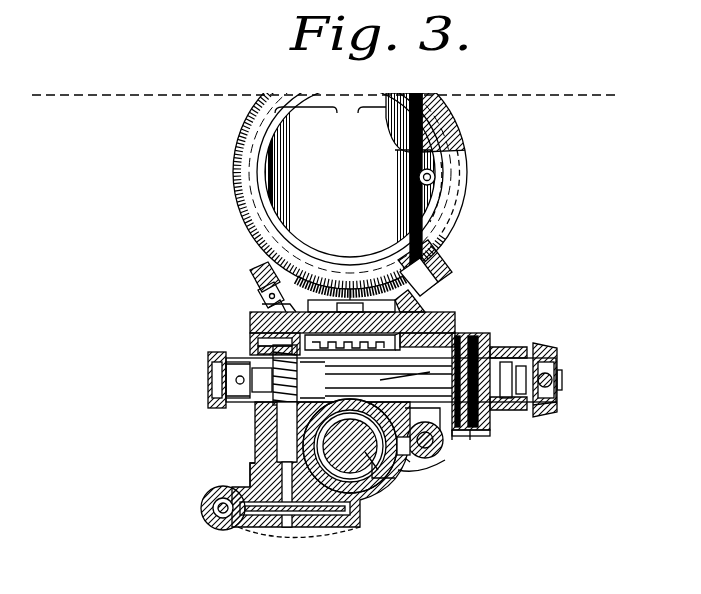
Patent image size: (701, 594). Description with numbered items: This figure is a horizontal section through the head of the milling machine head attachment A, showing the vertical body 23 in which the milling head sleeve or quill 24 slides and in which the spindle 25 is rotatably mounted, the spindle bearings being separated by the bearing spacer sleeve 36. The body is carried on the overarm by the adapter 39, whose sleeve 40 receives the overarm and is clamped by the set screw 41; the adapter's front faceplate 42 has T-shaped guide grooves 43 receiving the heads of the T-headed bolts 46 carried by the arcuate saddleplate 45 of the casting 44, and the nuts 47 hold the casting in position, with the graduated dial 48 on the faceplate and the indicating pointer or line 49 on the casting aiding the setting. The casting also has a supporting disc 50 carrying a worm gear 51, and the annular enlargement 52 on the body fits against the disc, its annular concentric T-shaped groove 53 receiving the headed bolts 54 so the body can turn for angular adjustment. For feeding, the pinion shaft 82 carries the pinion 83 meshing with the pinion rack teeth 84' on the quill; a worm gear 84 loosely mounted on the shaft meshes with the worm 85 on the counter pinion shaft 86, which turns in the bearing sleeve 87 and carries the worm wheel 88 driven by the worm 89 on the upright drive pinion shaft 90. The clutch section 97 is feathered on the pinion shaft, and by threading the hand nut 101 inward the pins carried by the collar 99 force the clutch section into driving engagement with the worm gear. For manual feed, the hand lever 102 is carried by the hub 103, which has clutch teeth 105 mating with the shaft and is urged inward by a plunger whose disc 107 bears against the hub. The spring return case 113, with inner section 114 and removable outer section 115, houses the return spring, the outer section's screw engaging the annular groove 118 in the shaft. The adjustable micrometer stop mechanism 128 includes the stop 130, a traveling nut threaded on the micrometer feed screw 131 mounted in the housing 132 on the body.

The vertical body 23 is at (425, 470).
The milling head sleeve or quill 24 is at (378, 482).
The spindle 25 is at (385, 470).
The bearing spacer sleeve 36 is at (360, 505).
The adapter 39 is at (233, 176).
The sleeve 40 is at (257, 226).
The set screw 41 is at (435, 177).
The front faceplate 42 is at (292, 191).
The T-shaped guide grooves 43 is at (452, 135).
The casting 44 is at (262, 304).
The arcuate saddleplate 45 is at (446, 269).
The T-headed bolts 46 is at (258, 299).
The nuts 47 is at (258, 288).
The graduated dial 48 is at (454, 226).
The indicating pointer or line 49 is at (258, 270).
The supporting disc 50 is at (455, 317).
The worm gear 51 is at (376, 347).
The annular enlargement 52 is at (252, 336).
The annular concentric T-shaped groove 53 is at (460, 334).
The headed bolts 54 is at (346, 270).
The pinion shaft 82 is at (470, 356).
The pinion 83 is at (342, 346).
The worm gear 84 is at (257, 342).
The pinion rack teeth 84' is at (391, 380).
The worm 85 is at (274, 403).
The counter pinion shaft 86 is at (283, 422).
The bearing sleeve 87 is at (273, 467).
The worm wheel 88 is at (262, 515).
The worm 89 is at (220, 516).
The upright drive pinion shaft 90 is at (222, 487).
The clutch section 97 is at (262, 380).
The collar 99 is at (226, 392).
The hand nut 101 is at (207, 374).
The hand lever 102 is at (558, 399).
The hub 103 is at (558, 349).
The clutch teeth 105 is at (504, 410).
The disc 107 is at (562, 379).
The spring return case 113 is at (490, 427).
The inner section 114 is at (450, 436).
The removable outer section 115 is at (480, 436).
The annular groove 118 is at (520, 347).
The adjustable micrometer stop mechanism 128 is at (392, 470).
The stop 130 is at (424, 418).
The micrometer feed screw 131 is at (445, 470).
The housing 132 is at (440, 465).
The milling machine head attachment A is at (440, 460).